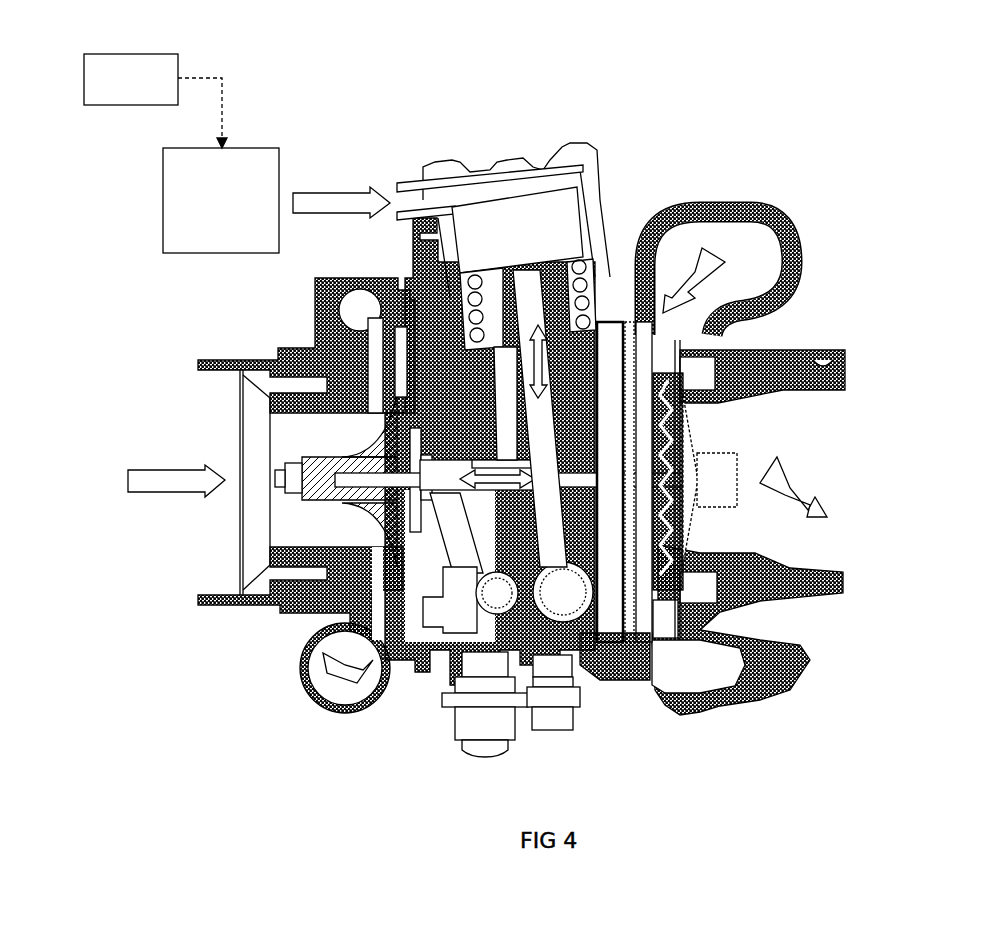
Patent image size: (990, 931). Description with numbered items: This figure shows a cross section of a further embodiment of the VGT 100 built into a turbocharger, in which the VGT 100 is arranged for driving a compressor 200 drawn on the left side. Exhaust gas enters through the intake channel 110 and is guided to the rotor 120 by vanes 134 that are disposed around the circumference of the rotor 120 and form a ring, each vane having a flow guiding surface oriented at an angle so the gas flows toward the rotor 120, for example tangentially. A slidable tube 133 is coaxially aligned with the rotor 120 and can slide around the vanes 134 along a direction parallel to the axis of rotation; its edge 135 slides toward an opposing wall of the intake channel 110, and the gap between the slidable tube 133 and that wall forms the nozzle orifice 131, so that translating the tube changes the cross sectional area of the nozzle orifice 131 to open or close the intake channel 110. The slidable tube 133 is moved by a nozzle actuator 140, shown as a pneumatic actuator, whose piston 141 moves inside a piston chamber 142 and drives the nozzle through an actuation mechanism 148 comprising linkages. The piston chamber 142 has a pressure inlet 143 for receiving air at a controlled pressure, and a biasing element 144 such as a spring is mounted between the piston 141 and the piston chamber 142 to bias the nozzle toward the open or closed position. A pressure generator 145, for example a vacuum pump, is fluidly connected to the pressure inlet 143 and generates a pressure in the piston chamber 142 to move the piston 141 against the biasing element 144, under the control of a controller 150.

The VGT 100 is at (919, 109).
The intake channel 110 is at (725, 262).
The rotor 120 is at (712, 431).
The nozzle orifice 131 is at (739, 476).
The slidable tube 133 is at (648, 523).
The vanes 134 is at (675, 548).
The edge 135 is at (677, 607).
The nozzle actuator 140 is at (397, 155).
The piston 141 is at (513, 222).
The piston chamber 142 is at (621, 234).
The pressure inlet 143 is at (375, 236).
The biasing element 144 is at (600, 283).
The pressure generator 145 is at (201, 214).
The actuation mechanism 148 is at (485, 437).
The controller 150 is at (111, 92).
The compressor 200 is at (210, 646).